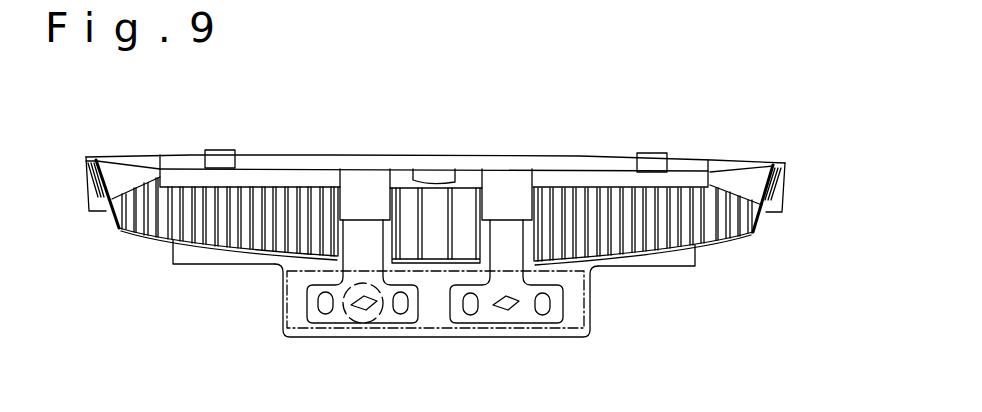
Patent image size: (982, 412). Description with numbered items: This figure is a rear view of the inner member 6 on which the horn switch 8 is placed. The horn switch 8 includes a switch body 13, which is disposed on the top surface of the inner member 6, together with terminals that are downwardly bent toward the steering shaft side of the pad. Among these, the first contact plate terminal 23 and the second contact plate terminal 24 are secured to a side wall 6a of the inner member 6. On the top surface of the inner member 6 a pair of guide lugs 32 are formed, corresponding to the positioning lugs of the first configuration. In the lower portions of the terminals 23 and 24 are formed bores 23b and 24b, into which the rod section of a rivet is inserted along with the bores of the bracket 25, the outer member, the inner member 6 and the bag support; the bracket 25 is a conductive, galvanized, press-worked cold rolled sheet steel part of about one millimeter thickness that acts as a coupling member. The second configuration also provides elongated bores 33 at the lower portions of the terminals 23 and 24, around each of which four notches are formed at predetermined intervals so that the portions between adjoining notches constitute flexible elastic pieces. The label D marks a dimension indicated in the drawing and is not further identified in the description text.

The inner member 6 is at (775, 240).
The side wall 6a is at (687, 260).
The horn switch 8 is at (626, 116).
The switch body 13 is at (470, 156).
The first contact plate terminal 23 is at (357, 243).
The bore 23b is at (400, 352).
The second contact plate terminal 24 is at (513, 248).
The bore 24b is at (472, 313).
The bracket 25 is at (572, 338).
The guide lugs 32 is at (652, 153).
The elongated bores 33 is at (520, 302).
The diameter D is at (380, 324).